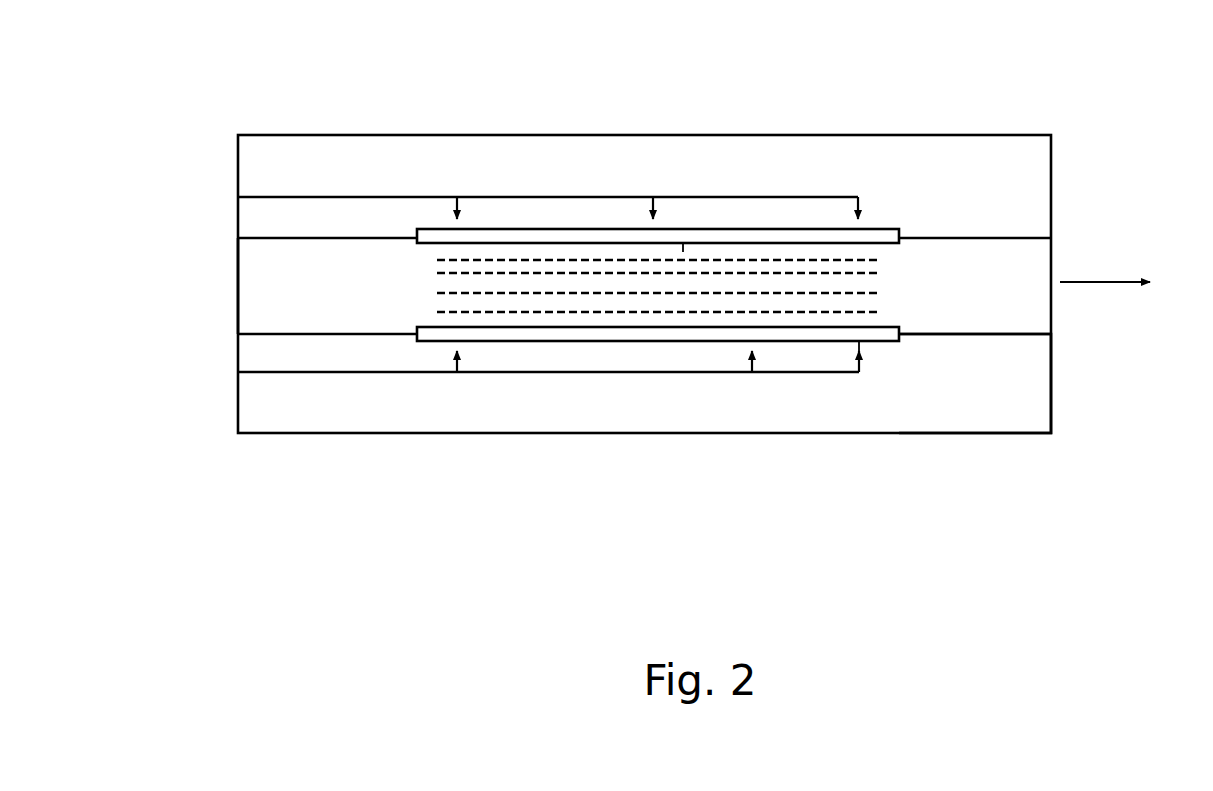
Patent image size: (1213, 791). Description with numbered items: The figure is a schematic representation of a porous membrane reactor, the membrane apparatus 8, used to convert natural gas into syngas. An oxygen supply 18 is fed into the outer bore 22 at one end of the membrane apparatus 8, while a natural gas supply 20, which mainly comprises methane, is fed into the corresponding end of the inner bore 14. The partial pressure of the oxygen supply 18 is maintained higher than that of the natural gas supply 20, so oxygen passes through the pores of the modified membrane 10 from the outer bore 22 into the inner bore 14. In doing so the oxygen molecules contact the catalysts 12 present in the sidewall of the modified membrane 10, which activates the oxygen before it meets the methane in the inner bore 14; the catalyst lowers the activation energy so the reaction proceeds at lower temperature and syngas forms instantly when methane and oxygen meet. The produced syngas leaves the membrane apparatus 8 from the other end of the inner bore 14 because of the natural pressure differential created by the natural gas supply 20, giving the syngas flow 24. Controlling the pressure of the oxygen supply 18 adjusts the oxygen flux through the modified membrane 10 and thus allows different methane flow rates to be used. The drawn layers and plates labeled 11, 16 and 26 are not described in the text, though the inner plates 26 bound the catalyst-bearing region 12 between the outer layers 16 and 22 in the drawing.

The membrane apparatus 8 is at (868, 116).
The modified membrane 10 is at (874, 352).
The upper electrode plate 11 is at (683, 250).
The catalysts 12 is at (602, 252).
The inner bore 14 is at (323, 236).
The top layer 16 is at (258, 134).
The oxygen supply 18 is at (225, 190).
The natural gas supply 20 is at (225, 282).
The outer bore 22 is at (1020, 404).
The syngas flow 24 is at (1125, 282).
The electrode plate 26 is at (430, 229).